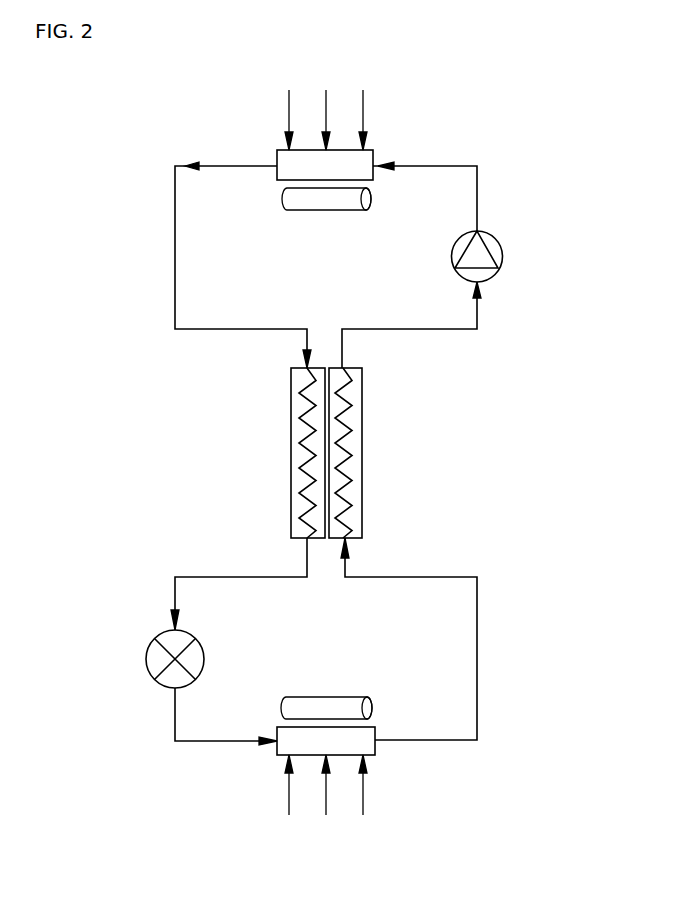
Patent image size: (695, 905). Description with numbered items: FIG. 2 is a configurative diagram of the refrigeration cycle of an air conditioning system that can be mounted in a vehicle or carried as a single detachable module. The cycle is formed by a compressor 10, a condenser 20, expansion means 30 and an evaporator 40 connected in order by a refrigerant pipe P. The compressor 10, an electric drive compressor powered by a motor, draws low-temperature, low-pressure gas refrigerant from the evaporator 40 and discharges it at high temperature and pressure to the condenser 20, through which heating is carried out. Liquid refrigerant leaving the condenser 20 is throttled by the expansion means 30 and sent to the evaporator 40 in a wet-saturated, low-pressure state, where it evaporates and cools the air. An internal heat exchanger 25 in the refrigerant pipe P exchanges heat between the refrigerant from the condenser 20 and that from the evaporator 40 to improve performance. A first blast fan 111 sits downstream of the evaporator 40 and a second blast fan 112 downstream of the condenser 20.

The refrigerant pipe P is at (478, 175).
The compressor 10 is at (498, 238).
The condenser 20 is at (370, 150).
The internal heat exchanger 25 is at (291, 452).
The expansion means 30 is at (146, 657).
The evaporator 40 is at (370, 757).
The first blast fan 111 is at (327, 697).
The second blast fan 112 is at (327, 210).